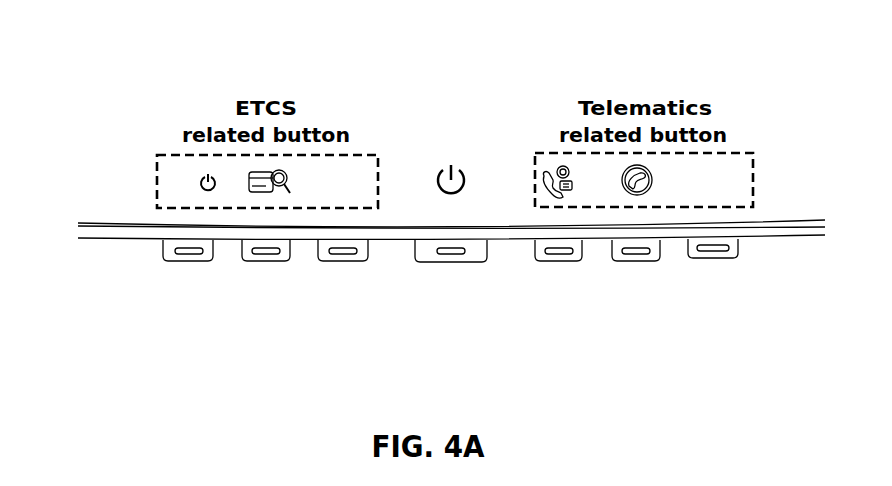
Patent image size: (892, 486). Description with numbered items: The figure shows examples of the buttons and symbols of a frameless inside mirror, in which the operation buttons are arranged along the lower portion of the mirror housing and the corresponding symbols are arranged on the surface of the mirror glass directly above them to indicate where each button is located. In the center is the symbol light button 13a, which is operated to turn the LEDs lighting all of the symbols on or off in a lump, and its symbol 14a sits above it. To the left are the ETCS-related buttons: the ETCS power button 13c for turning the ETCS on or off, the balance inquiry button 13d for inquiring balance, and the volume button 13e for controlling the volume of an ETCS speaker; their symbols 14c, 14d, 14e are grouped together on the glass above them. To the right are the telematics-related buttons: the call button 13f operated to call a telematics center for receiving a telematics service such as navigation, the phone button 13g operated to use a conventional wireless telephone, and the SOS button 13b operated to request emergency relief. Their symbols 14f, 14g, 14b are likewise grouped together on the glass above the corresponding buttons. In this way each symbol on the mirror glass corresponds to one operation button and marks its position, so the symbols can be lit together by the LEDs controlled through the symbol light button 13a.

The symbol light button 13a is at (432, 262).
The SOS button 13b is at (713, 258).
The ETCS power button 13c is at (183, 262).
The balance inquiry button 13d is at (265, 262).
The volume button 13e is at (340, 263).
The call button 13f is at (555, 262).
The phone button 13g is at (635, 261).
The symbol 14a is at (441, 178).
The symbol 14b is at (738, 171).
The symbol 14c is at (157, 184).
The symbol 14d is at (252, 193).
The symbol 14e is at (358, 182).
The symbol 14f is at (548, 172).
The symbol 14g is at (621, 193).